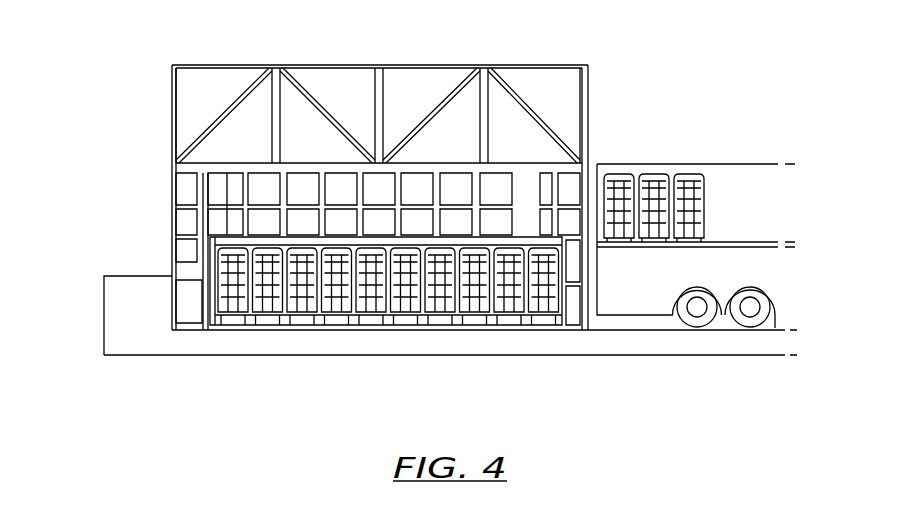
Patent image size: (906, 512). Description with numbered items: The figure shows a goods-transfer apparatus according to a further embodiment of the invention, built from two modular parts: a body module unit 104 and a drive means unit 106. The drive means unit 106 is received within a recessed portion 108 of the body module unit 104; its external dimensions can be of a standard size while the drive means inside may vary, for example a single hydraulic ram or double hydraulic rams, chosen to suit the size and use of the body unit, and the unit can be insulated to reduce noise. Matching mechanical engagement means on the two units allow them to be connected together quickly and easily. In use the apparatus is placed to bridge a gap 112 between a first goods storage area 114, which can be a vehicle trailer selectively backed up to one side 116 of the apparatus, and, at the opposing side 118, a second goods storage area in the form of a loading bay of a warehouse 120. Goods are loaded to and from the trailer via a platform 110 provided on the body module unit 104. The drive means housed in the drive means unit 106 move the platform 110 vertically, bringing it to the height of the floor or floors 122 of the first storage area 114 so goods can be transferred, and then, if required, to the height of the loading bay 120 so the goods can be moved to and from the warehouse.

The body module unit 104 is at (366, 65).
The drive means unit 106 is at (187, 318).
The recessed portion 108 is at (185, 290).
The platform 110 is at (492, 318).
The gap 112 is at (373, 355).
The first goods storage area 114 is at (637, 178).
The enclosure wall 116 is at (590, 107).
The opposing side 118 is at (193, 113).
The loading bay of a warehouse 120 is at (120, 278).
The floors 122 is at (732, 240).